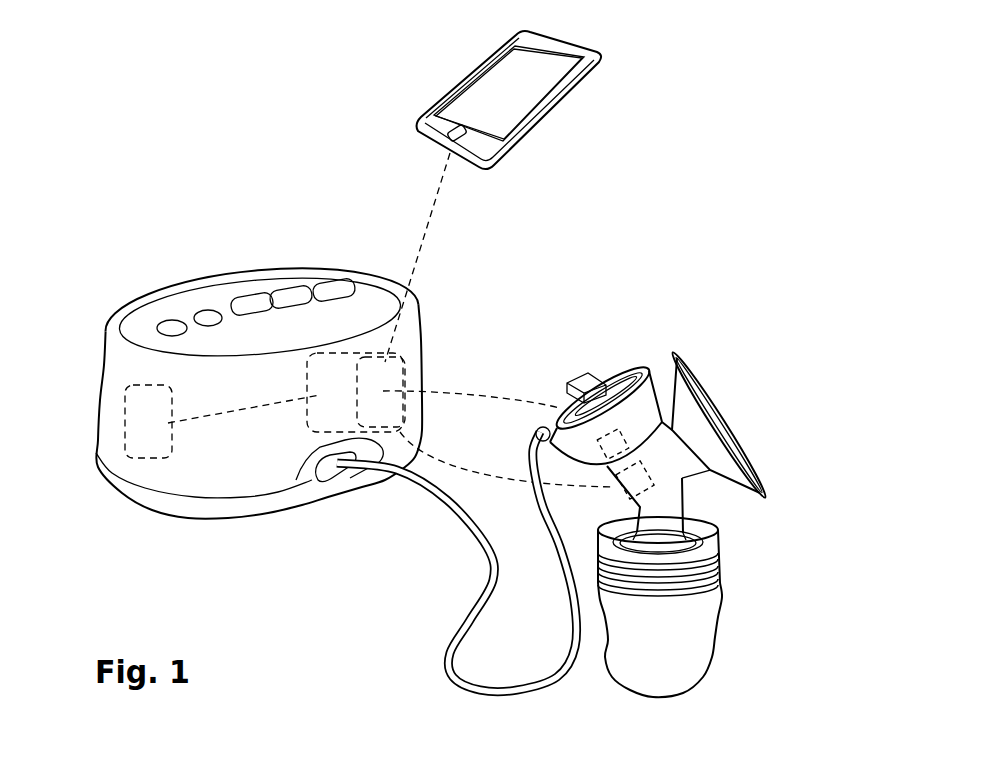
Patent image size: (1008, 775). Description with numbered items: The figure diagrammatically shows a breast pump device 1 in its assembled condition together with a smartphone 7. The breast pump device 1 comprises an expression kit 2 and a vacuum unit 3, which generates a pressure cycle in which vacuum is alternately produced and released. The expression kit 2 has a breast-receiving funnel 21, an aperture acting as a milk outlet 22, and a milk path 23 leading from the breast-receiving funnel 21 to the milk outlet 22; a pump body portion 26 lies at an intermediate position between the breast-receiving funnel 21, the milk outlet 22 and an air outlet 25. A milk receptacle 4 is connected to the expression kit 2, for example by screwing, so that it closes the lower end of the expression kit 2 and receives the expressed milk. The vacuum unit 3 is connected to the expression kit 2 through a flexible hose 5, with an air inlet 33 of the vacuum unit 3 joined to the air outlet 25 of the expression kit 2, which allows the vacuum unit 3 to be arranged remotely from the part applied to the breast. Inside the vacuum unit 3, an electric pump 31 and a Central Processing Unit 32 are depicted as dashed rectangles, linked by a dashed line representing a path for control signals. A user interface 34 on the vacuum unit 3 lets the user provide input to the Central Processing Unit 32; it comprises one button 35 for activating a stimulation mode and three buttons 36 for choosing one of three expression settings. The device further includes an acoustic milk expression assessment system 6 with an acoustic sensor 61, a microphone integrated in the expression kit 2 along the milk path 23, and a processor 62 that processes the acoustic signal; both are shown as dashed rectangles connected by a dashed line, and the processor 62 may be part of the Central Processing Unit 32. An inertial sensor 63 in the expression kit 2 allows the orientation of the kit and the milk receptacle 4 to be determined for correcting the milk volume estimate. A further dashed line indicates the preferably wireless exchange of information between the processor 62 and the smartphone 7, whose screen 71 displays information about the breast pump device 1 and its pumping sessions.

The breast pump device 1 is at (267, 182).
The expression kit 2 is at (705, 328).
The vacuum unit 3 is at (145, 265).
The milk receptacle 4 is at (703, 633).
The flexible hose 5 is at (470, 610).
The acoustic milk expression assessment system 6 is at (548, 267).
The smartphone 7 is at (433, 83).
The breast-receiving funnel 21 is at (708, 415).
The milk outlet 22 is at (668, 553).
The milk path 23 is at (660, 522).
The air outlet 25 is at (625, 360).
The pump body portion 26 is at (665, 468).
The electric pump 31 is at (138, 408).
The Central Processing Unit 32 is at (345, 367).
The air inlet 33 is at (333, 477).
The user interface 34 is at (310, 255).
The button 35 is at (207, 318).
The buttons 36 is at (250, 302).
The acoustic sensor 61 is at (632, 483).
The processor 62 is at (395, 377).
The inertial sensor 63 is at (617, 445).
The screen 71 is at (502, 78).